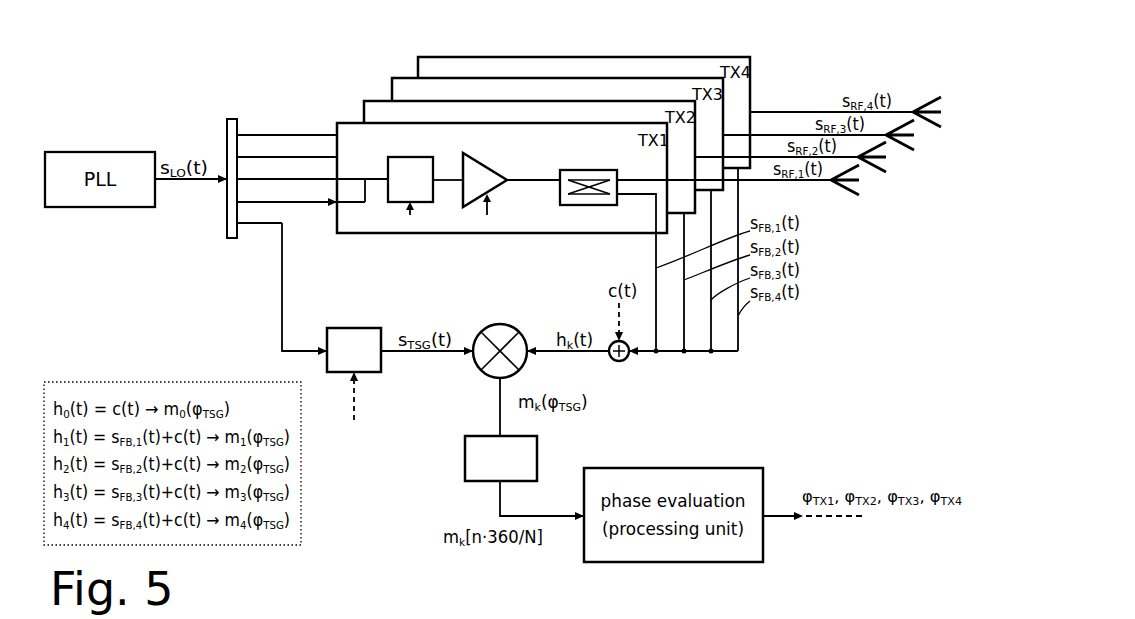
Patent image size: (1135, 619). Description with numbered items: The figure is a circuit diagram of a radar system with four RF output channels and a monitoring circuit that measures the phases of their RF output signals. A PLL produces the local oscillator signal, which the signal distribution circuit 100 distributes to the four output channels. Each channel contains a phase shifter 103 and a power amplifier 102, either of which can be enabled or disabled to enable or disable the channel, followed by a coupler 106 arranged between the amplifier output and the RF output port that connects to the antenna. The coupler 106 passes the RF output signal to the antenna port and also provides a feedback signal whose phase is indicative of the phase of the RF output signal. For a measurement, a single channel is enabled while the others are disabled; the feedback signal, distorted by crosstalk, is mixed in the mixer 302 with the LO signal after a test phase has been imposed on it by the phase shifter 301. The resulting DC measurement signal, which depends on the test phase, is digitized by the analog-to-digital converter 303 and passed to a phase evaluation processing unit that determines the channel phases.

The signal distribution circuit 100 is at (232, 118).
The power amplifier 102 is at (495, 169).
The phase shifter 103 is at (447, 152).
The coupler 106 is at (578, 169).
The phase shifter 301 is at (362, 327).
The mixer 302 is at (517, 326).
The analog-to-digital converter 303 is at (463, 457).